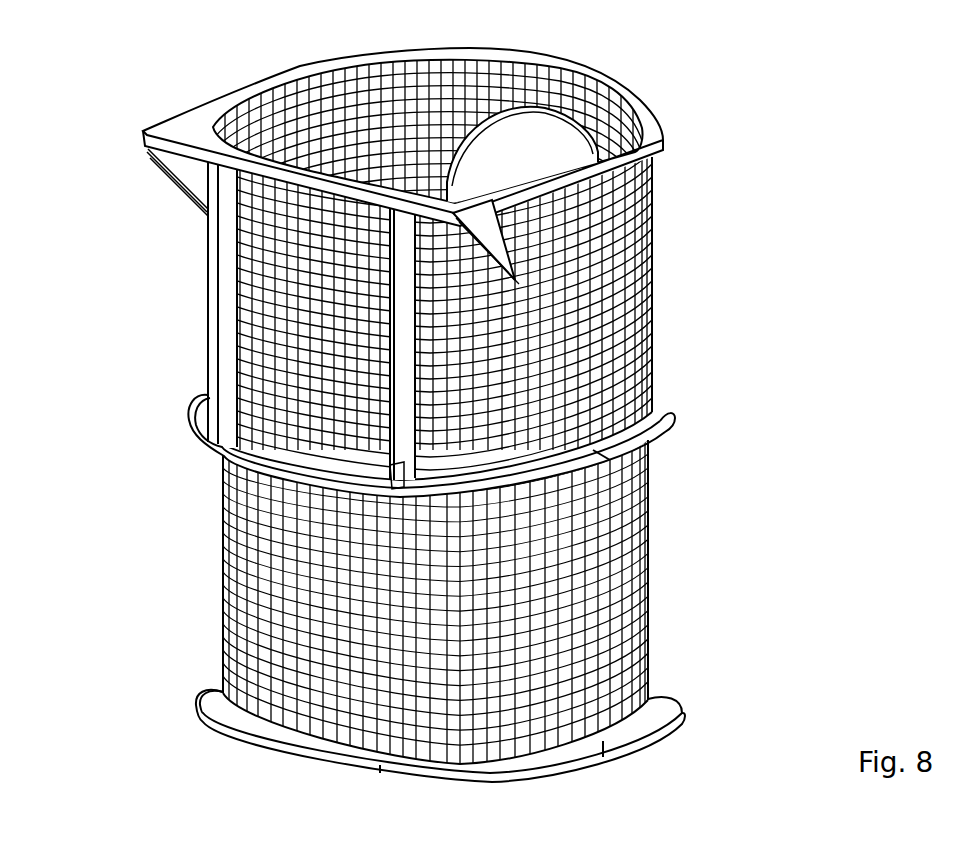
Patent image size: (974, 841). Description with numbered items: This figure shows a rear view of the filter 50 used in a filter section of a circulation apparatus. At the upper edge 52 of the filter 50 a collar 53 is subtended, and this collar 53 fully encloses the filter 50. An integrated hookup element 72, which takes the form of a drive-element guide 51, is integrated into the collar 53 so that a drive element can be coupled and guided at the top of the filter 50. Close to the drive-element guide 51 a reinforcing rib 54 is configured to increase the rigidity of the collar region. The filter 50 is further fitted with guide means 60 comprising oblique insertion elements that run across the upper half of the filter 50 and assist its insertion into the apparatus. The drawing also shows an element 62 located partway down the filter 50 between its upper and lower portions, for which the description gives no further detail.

The filter 50 is at (248, 661).
The drive-element guide 51 is at (440, 190).
The upper edge 52 is at (501, 153).
The collar 53 is at (663, 135).
The reinforcing rib 54 is at (501, 242).
The guide means 60 is at (370, 318).
The intermediate flange 62 is at (203, 439).
The hookup element 72 is at (531, 309).